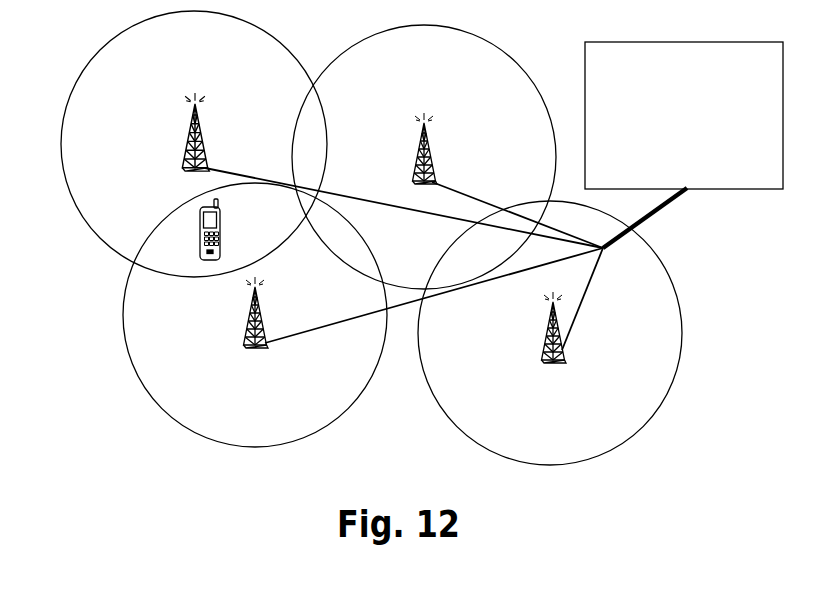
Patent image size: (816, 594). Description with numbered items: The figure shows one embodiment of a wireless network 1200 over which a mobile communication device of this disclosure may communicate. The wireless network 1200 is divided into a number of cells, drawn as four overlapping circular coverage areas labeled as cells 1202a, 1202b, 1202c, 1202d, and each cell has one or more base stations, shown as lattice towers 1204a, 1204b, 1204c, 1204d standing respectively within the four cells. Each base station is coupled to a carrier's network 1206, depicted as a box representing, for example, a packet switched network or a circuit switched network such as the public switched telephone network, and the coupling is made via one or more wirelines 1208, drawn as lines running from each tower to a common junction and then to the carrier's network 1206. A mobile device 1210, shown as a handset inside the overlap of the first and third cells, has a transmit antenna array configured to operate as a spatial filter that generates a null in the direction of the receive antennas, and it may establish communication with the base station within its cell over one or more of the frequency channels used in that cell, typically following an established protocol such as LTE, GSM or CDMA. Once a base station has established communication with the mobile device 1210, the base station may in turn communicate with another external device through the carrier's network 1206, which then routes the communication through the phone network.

The wireless network 1200 is at (395, 471).
The cell 1202a is at (113, 38).
The cell 1202b is at (367, 37).
The cell 1202c is at (122, 315).
The cell 1202d is at (685, 333).
The base station 1204a is at (213, 94).
The base station 1204b is at (441, 102).
The base station 1204c is at (245, 360).
The base station 1204d is at (579, 371).
The carrier's network 1206 is at (683, 42).
The wireline 1208 is at (222, 170).
The mobile device 1210 is at (222, 232).